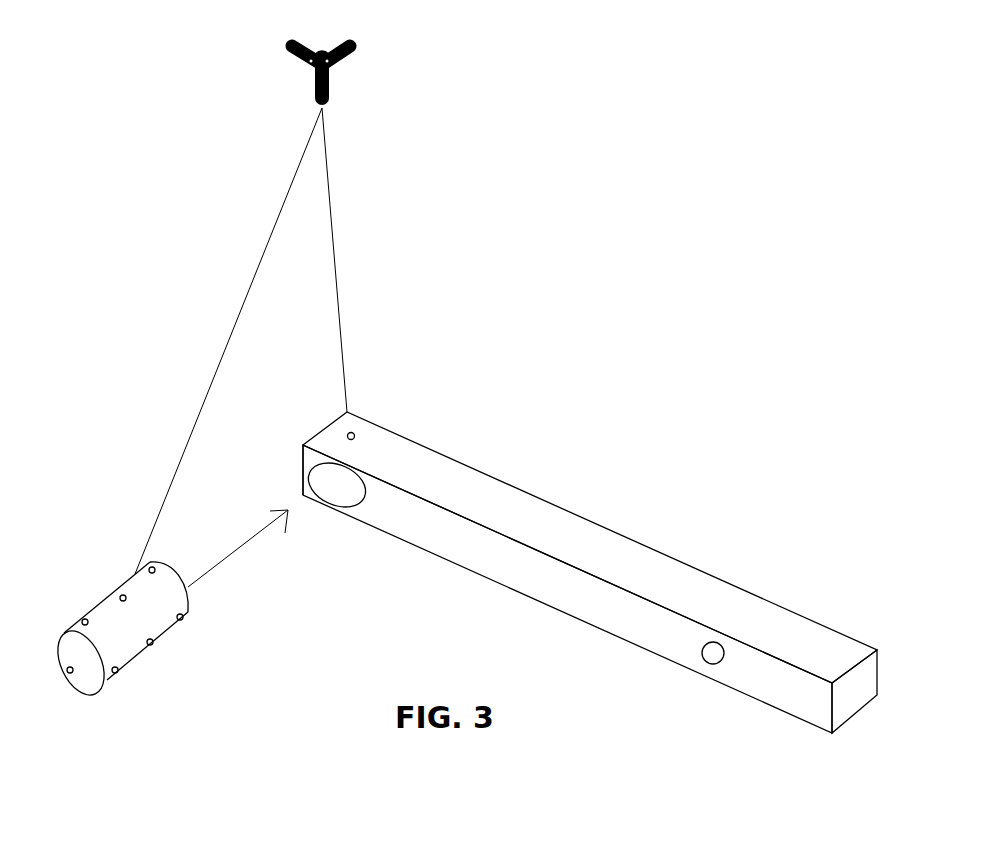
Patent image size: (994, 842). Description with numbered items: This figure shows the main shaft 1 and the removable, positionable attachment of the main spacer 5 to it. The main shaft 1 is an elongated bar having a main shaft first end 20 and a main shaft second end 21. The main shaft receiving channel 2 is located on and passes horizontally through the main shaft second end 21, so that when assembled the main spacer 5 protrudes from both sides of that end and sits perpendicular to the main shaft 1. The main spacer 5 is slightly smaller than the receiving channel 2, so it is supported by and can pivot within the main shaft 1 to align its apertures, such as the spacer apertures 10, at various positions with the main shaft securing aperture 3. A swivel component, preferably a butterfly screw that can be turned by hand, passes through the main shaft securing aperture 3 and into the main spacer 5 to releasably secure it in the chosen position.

The main shaft 1 is at (555, 503).
The main shaft receiving channel 2 is at (338, 497).
The main shaft securing aperture 3 is at (352, 434).
The main spacer 5 is at (105, 628).
The spacer aperture 10 is at (69, 668).
The main shaft first end 20 is at (877, 693).
The main shaft second end 21 is at (303, 447).